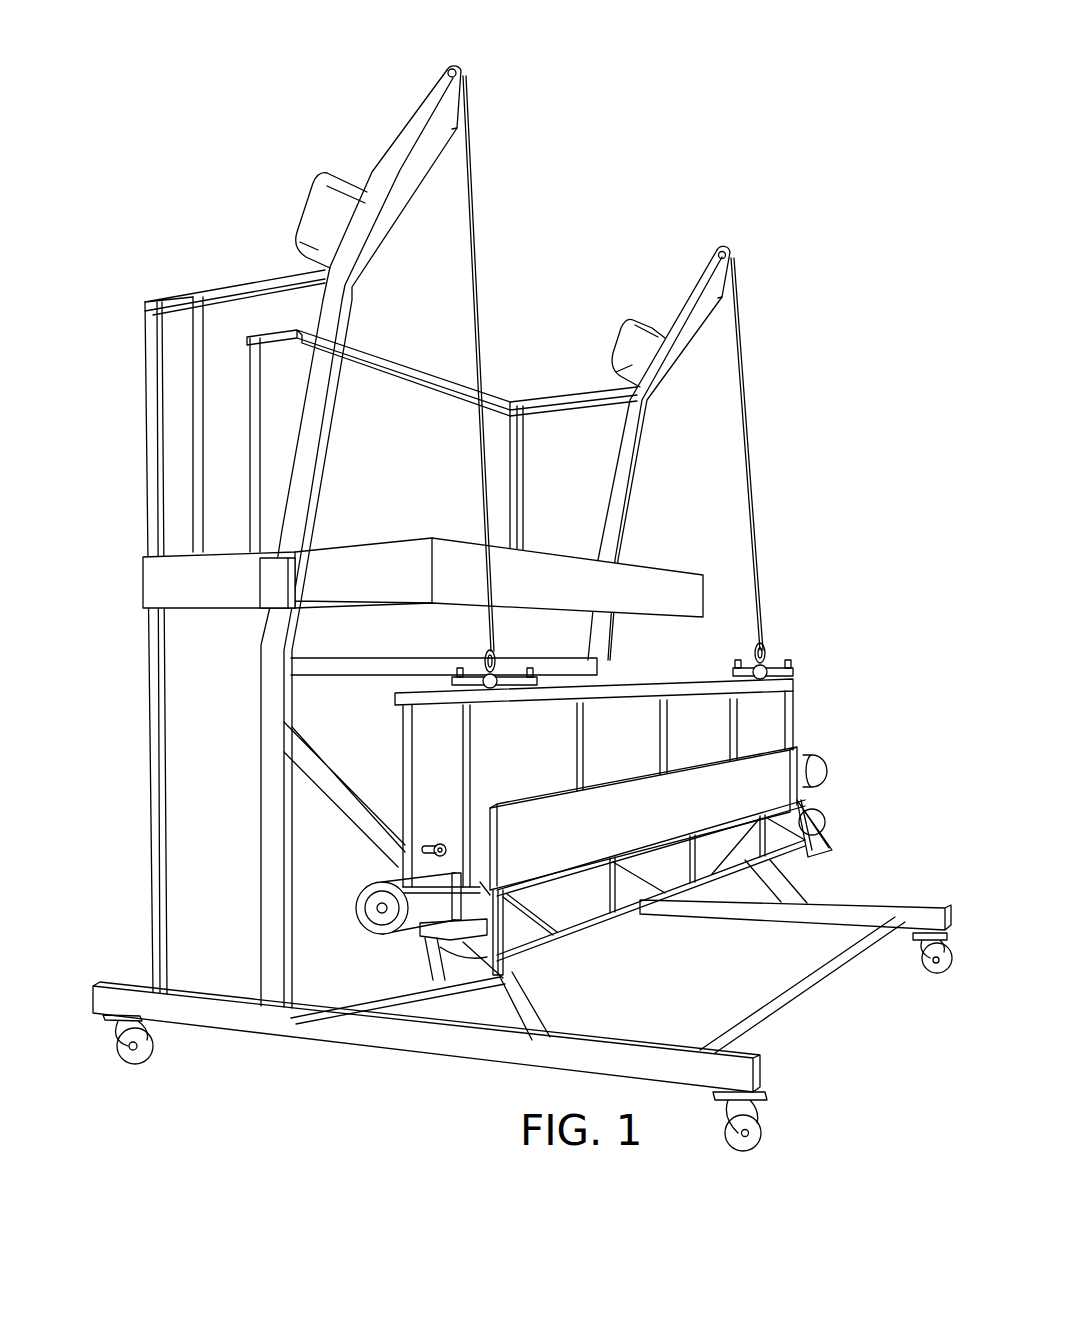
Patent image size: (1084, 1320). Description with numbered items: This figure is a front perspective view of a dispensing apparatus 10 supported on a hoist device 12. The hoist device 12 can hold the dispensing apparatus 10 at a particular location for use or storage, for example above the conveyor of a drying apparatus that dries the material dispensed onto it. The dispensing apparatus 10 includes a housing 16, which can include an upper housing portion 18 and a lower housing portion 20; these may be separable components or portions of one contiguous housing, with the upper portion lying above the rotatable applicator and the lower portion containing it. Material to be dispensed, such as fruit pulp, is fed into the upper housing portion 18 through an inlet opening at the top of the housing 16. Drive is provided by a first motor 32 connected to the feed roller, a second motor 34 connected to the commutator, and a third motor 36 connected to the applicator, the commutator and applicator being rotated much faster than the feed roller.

The dispensing apparatus 10 is at (522, 608).
The hoist device 12 is at (323, 1043).
The housing 16 is at (634, 769).
The upper housing portion 18 is at (635, 760).
The lower housing portion 20 is at (590, 900).
The first motor 32 is at (818, 768).
The second motor 34 is at (377, 887).
The third motor 36 is at (825, 817).